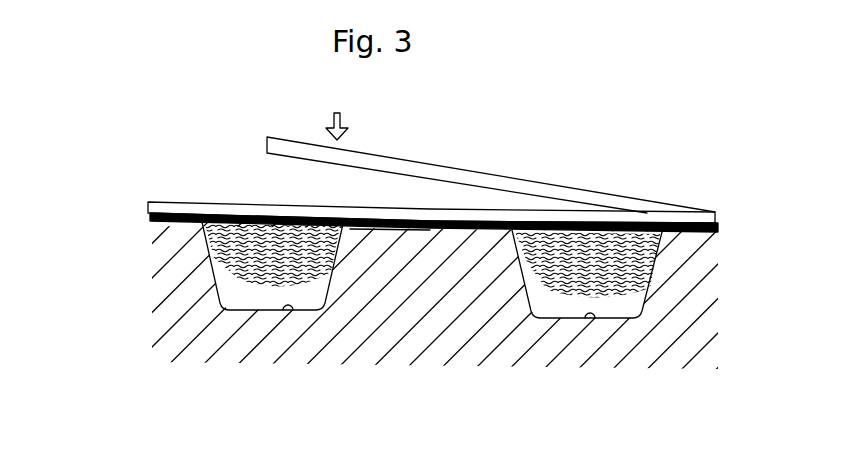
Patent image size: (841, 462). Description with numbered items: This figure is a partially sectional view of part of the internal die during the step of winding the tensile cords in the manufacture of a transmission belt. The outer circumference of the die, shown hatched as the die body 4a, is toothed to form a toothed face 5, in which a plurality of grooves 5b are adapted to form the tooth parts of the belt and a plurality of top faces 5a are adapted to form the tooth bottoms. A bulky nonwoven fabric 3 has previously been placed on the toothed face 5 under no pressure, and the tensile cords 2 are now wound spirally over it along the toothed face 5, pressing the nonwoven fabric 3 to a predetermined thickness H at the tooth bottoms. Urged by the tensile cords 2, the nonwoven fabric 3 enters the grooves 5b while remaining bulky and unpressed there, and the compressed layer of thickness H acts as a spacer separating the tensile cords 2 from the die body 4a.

The tensile cords 2 is at (403, 210).
The nonwoven fabric 3 is at (270, 242).
The mold body 4a is at (463, 342).
The toothed face 5 is at (297, 415).
The top faces 5a is at (385, 233).
The grooves 5b is at (290, 313).
The predetermined thickness H is at (137, 225).